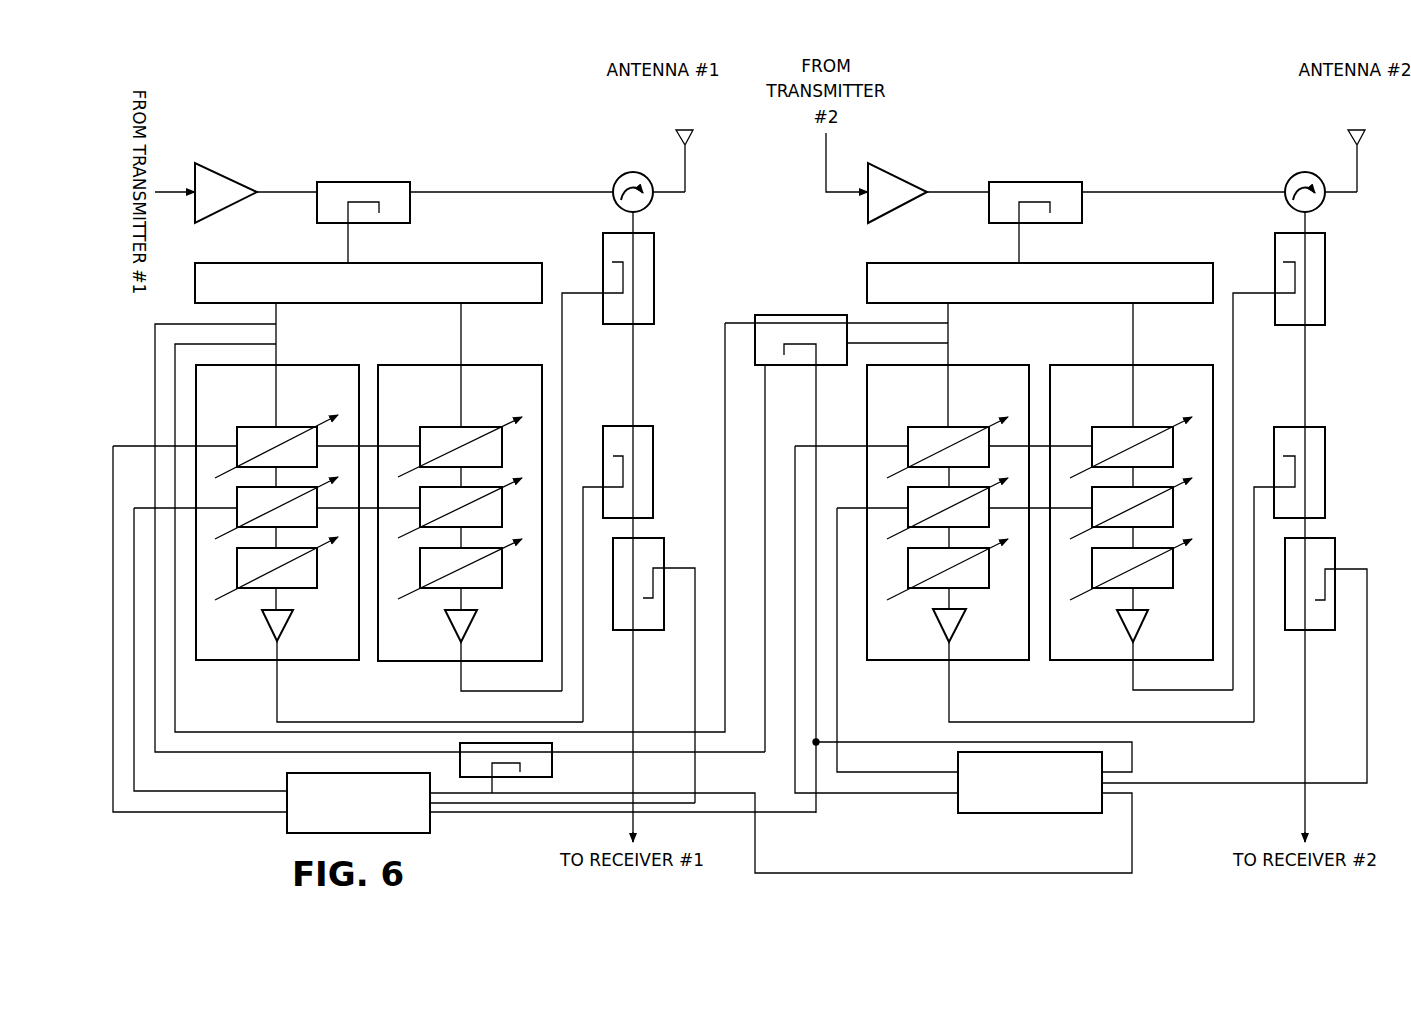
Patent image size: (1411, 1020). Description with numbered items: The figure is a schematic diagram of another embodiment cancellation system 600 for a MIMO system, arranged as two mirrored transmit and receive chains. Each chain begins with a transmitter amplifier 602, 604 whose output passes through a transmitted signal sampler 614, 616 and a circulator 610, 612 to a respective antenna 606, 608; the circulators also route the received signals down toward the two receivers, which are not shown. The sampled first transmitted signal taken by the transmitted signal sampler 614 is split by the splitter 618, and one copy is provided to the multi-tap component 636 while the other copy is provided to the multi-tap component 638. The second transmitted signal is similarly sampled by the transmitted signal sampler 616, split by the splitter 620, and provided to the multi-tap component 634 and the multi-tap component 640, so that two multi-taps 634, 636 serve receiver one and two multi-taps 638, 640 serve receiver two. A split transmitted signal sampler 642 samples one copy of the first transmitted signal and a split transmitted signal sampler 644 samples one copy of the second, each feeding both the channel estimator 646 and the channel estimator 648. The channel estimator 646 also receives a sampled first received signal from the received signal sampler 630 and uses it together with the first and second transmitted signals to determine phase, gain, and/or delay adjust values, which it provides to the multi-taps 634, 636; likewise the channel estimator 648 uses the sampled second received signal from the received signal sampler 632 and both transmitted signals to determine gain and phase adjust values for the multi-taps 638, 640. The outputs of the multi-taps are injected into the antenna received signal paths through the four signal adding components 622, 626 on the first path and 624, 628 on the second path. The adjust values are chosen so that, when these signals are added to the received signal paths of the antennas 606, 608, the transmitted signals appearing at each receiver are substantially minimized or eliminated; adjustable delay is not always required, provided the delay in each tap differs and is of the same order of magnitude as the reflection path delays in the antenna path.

The cancellation system 600 is at (285, 110).
The transmitter amplifier 602 is at (228, 174).
The transmitter amplifier 604 is at (900, 173).
The antenna 606 is at (677, 130).
The antenna 608 is at (1357, 130).
The circulator 610 is at (637, 172).
The circulator 612 is at (1305, 172).
The transmitted signal sampler 614 is at (368, 182).
The transmitted signal sampler 616 is at (1040, 182).
The splitter 618 is at (288, 263).
The splitter 620 is at (1152, 263).
The signal adding component 622 is at (613, 324).
The signal adding component 624 is at (1285, 325).
The signal adding component 626 is at (642, 426).
The signal adding component 628 is at (1315, 427).
The received signal sampler 630 is at (653, 630).
The received signal sampler 632 is at (1325, 630).
The multi-tap component 634 is at (235, 663).
The multi-tap component 636 is at (427, 362).
The multi-tap component 638 is at (980, 362).
The multi-tap component 640 is at (1153, 362).
The split transmitted signal sampler 642 is at (553, 760).
The split transmitted signal sampler 644 is at (802, 315).
The channel estimator 646 is at (285, 823).
The channel estimator 648 is at (1028, 813).